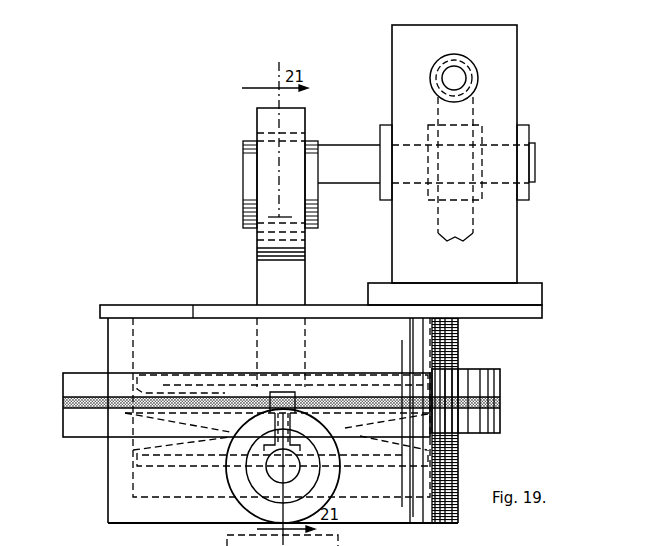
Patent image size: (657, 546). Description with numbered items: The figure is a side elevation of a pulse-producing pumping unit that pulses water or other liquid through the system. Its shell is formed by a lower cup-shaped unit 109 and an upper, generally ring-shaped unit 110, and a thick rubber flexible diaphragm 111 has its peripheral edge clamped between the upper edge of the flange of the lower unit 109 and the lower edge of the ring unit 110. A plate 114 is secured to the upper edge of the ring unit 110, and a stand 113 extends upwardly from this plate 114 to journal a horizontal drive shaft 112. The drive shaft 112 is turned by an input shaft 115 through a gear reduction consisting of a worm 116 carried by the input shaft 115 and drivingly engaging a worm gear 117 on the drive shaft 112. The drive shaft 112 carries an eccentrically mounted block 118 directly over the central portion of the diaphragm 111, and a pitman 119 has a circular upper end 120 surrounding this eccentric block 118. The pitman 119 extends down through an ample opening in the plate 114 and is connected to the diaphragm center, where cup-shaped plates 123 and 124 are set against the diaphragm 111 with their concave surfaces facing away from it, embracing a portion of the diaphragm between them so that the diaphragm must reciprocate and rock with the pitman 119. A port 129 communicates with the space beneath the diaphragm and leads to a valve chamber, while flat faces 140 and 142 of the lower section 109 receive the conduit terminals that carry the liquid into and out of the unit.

The lower cup-shaped unit 109 is at (126, 511).
The upper ring shaped unit 110 is at (148, 350).
The flexible diaphragm 111 is at (63, 405).
The drive shaft 112 is at (340, 157).
The stand 113 is at (521, 99).
The plate 114 is at (166, 306).
The input shaft 115 is at (456, 78).
The worm 116 is at (470, 72).
The worm gear 117 is at (474, 222).
The eccentric block 118 is at (247, 193).
The pitman 119 is at (273, 279).
The circular upper end of pitman 120 is at (263, 120).
The upper cup-shaped plate 123 is at (407, 390).
The lower cup-shaped plate 124 is at (382, 442).
The port 129 is at (266, 471).
The face of lower section 140 is at (353, 538).
The face of lower section 142 is at (250, 502).